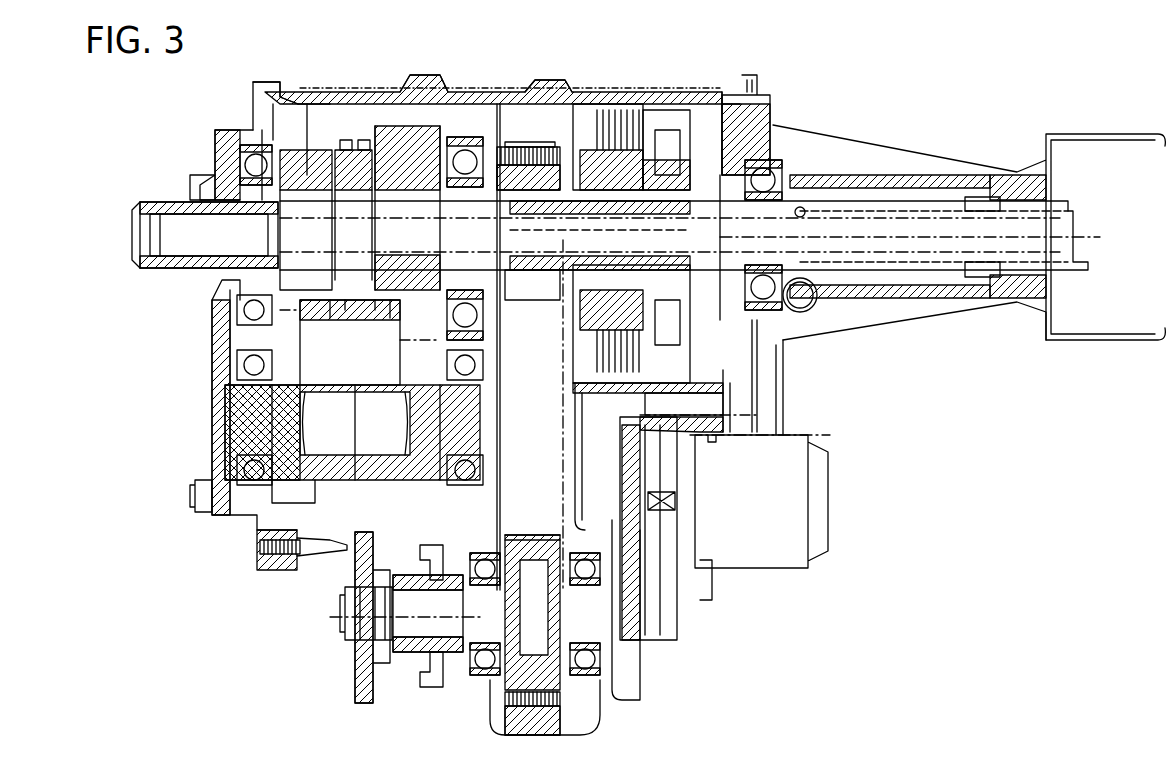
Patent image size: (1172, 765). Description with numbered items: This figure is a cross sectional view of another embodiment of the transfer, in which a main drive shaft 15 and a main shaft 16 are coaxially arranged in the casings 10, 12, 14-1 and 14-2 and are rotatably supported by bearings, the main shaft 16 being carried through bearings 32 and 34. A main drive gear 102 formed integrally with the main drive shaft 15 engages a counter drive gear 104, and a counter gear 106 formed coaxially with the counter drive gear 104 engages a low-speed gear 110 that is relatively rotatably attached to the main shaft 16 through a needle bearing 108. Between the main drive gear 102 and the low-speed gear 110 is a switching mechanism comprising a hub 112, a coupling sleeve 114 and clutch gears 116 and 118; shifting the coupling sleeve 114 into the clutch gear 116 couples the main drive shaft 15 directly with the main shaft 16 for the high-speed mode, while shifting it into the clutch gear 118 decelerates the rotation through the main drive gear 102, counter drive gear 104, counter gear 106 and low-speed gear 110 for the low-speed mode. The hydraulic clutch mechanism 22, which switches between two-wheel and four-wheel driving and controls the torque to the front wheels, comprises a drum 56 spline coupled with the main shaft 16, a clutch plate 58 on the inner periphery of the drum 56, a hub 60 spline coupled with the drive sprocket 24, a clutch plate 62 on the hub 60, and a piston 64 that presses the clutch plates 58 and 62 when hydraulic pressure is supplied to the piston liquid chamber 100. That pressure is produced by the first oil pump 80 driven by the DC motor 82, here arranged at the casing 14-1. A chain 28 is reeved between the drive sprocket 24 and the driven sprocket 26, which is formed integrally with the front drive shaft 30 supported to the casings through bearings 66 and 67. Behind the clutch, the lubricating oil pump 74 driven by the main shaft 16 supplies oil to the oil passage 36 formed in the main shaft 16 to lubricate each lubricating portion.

The casing 10 is at (313, 95).
The casing 12 is at (445, 84).
The main drive shaft 15 is at (130, 236).
The main shaft 16 is at (540, 270).
The hydraulic clutch mechanism 22 is at (680, 90).
The drive sprocket 24 is at (536, 146).
The driven sprocket 26 is at (526, 545).
The chain 28 is at (512, 163).
The front drive shaft 30 is at (408, 628).
The bearing 32 is at (463, 134).
The bearing 34 is at (806, 146).
The oil passage 36 is at (535, 305).
The drum 56 is at (607, 118).
The clutch plate 58 is at (632, 128).
The hub 60 is at (796, 371).
The clutch plate 62 is at (563, 355).
The piston 64 is at (766, 96).
The bearing 66 is at (470, 690).
The bearing 67 is at (608, 680).
The lubricating oil pump 74 is at (785, 145).
The oil pump 80 is at (672, 612).
The DC motor 82 is at (763, 570).
The piston liquid chamber 100 is at (665, 214).
The main drive gear 102 is at (246, 118).
The counter drive gear 104 is at (215, 334).
The counter gear 106 is at (386, 493).
The needle bearing 108 is at (386, 330).
The low-speed gear 110 is at (400, 145).
The hub 112 is at (346, 168).
The coupling sleeve 114 is at (356, 148).
The clutch gear 116 is at (320, 168).
The clutch gear 118 is at (374, 142).
The casing 14-1 is at (568, 86).
The casing 14-2 is at (888, 152).